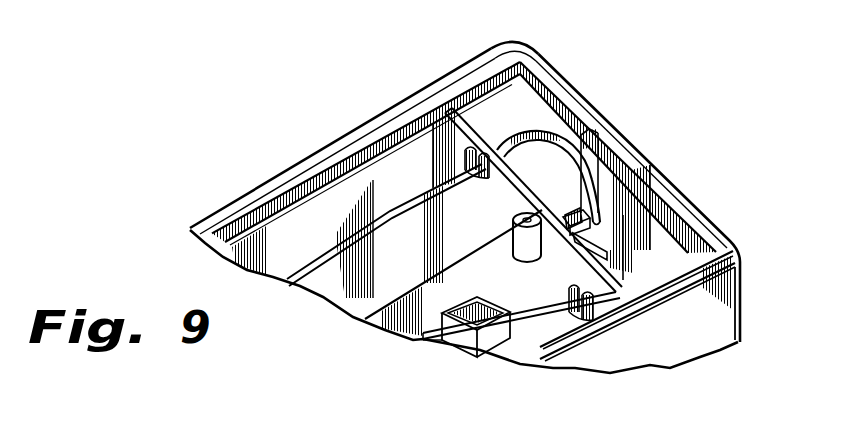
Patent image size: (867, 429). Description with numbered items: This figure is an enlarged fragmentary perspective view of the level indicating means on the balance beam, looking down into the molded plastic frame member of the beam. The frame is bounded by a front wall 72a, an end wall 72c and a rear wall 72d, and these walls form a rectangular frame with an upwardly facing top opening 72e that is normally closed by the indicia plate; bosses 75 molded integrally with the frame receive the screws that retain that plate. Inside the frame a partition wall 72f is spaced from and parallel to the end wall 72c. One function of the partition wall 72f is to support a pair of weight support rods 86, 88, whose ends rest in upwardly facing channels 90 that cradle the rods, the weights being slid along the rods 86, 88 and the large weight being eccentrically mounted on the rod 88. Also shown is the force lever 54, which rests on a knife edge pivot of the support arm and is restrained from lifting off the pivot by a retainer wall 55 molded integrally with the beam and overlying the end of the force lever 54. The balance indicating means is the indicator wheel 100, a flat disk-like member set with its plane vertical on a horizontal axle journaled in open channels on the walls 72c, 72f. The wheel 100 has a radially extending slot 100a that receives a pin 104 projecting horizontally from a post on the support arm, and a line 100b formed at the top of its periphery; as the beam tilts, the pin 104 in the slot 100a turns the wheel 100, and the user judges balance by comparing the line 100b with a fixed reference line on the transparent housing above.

The front wall 72a is at (707, 323).
The end wall 72c is at (700, 210).
The rear wall 72d is at (323, 215).
The top opening 72e is at (525, 68).
The partition wall 72f is at (506, 209).
The weight support rod 86 is at (405, 200).
The weight support rod 88 is at (551, 331).
The channels 90 is at (428, 121).
The indicator wheel 100 is at (545, 134).
The radially extending slot 100a is at (568, 217).
The line 100b is at (590, 132).
The pin 104 is at (573, 247).
The bosses 75 is at (511, 236).
The retainer wall 55 is at (466, 300).
The force lever 54 is at (420, 340).